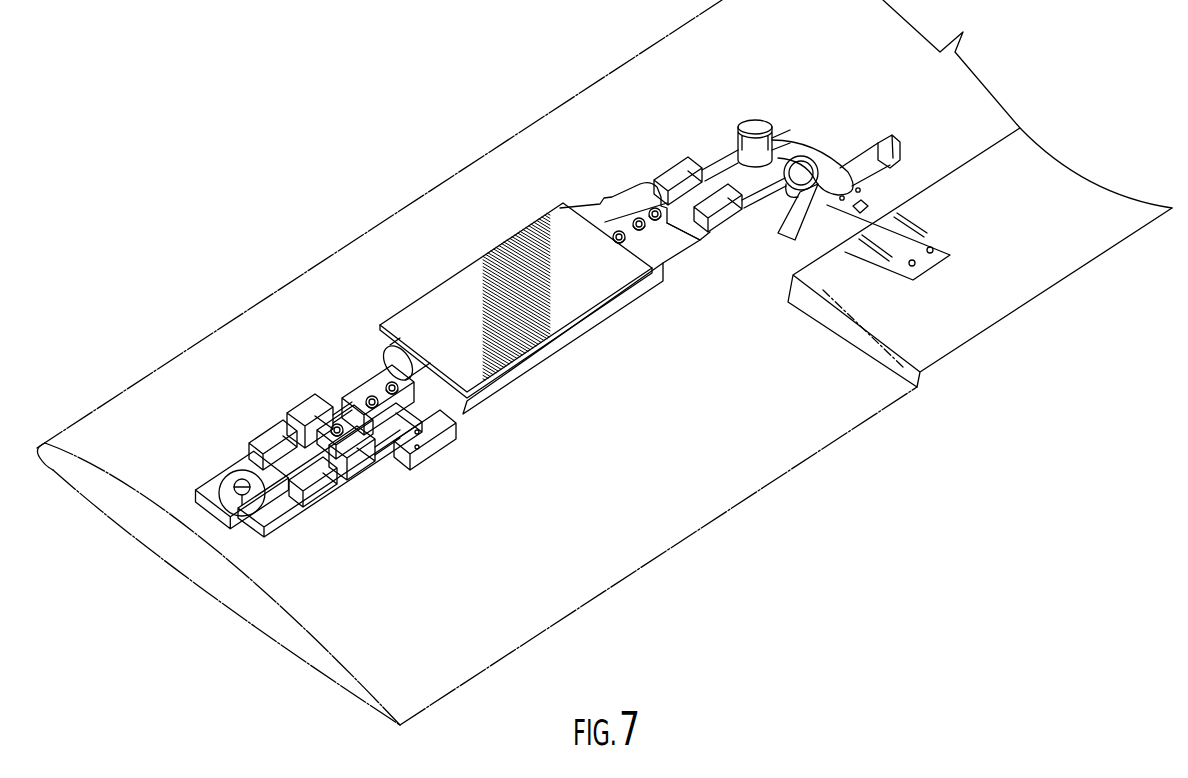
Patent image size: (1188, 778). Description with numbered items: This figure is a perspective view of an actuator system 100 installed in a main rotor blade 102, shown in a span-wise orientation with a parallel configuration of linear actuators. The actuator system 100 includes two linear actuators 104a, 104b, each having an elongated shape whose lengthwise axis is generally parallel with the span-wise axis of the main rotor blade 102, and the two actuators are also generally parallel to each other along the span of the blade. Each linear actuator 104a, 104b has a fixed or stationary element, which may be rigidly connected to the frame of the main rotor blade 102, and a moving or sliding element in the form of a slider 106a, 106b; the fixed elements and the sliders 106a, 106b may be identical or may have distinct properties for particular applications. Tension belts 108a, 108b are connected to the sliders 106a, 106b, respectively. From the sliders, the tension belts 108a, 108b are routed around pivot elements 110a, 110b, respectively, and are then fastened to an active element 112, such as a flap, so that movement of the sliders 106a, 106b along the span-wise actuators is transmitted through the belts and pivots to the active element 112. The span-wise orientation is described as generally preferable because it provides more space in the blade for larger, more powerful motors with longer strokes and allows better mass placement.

The actuator system 100 is at (548, 289).
The main rotor blade 102 is at (222, 317).
The linear actuator 104a is at (370, 350).
The linear actuator 104b is at (425, 425).
The slider 106a is at (660, 165).
The slider 106b is at (700, 220).
The tension belt 108a is at (718, 140).
The tension belt 108b is at (778, 182).
The pivot element 110a is at (767, 118).
The pivot element 110b is at (787, 160).
The active element 112 is at (972, 318).